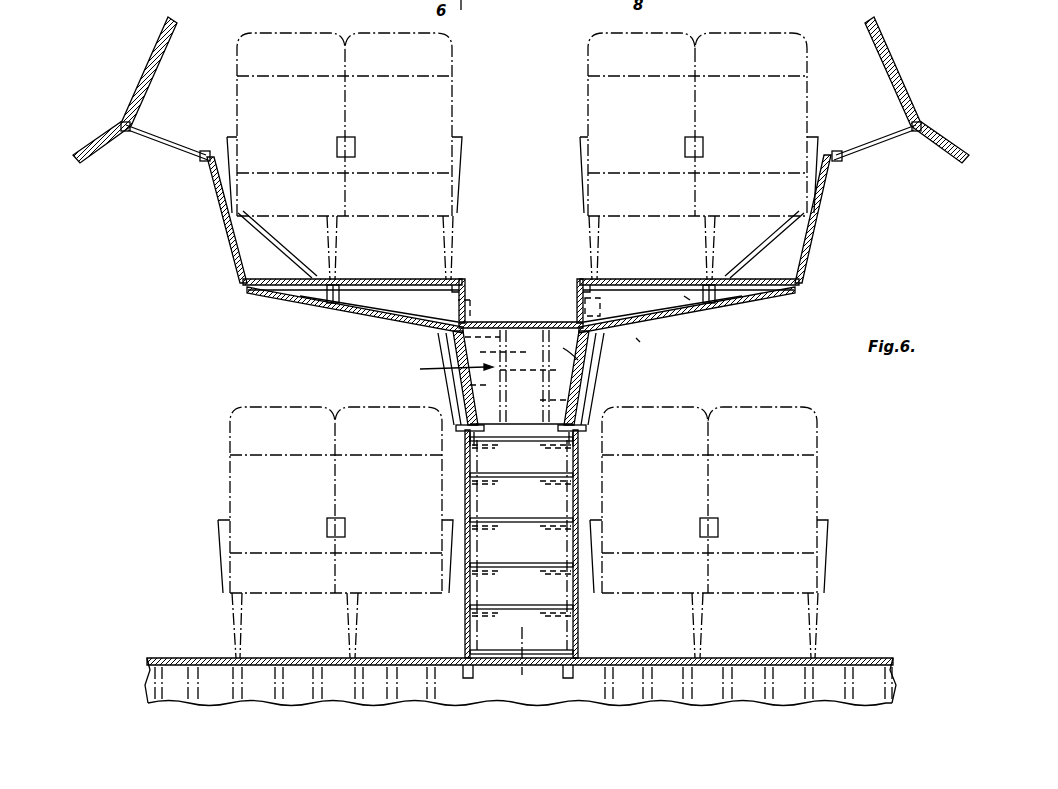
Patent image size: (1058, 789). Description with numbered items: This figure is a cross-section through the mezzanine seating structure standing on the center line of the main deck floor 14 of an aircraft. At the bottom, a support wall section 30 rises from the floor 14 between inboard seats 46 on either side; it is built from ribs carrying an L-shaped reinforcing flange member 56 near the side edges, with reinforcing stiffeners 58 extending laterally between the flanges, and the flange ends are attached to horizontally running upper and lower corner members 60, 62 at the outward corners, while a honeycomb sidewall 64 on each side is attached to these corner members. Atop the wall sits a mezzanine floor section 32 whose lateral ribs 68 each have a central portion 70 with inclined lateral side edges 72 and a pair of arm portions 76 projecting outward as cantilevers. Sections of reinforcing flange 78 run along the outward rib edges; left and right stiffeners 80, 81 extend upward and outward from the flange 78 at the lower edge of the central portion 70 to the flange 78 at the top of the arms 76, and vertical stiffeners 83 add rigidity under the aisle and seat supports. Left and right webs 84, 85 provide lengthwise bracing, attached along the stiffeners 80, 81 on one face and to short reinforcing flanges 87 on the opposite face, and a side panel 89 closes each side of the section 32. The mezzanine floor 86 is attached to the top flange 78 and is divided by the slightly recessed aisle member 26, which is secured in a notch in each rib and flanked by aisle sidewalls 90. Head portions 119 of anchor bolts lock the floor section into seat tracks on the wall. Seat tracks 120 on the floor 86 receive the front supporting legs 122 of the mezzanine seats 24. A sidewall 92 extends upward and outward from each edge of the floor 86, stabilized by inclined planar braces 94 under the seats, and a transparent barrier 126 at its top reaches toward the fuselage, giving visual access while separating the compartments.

The main deck floor 14 is at (867, 657).
The mezzanine seats 24 is at (255, 45).
The aisle member 26 is at (548, 326).
The support wall section 30 is at (558, 540).
The mezzanine floor section 32 is at (640, 340).
The inboard seat 46 is at (242, 423).
The L-shaped reinforcing flange member 56 is at (563, 501).
The reinforcing stiffeners 58 is at (550, 607).
The upper corner member 60 is at (466, 431).
The lower corner member 62 is at (467, 653).
The sidewall 64 is at (467, 590).
The rib 68 is at (444, 373).
The central portion 70 is at (563, 348).
The lateral side edges 72 is at (437, 352).
The arm portions 76 is at (390, 300).
The reinforcing flange 78 is at (289, 289).
The left stiffener 80 is at (465, 310).
The right stiffener 81 is at (594, 303).
The vertical stiffeners 83 is at (345, 297).
The left web 84 is at (460, 387).
The right web 85 is at (580, 362).
The mezzanine floor 86 is at (394, 279).
The reinforcing flange 87 is at (453, 343).
The side panel 89 is at (688, 298).
The aisle sidewalls 90 is at (468, 293).
The sidewall 92 is at (232, 232).
The inclined braces 94 is at (262, 250).
The head portion 119 is at (472, 441).
The seat tracks 120 is at (334, 281).
The front supporting legs 122 is at (453, 227).
The transparent barrier 126 is at (163, 143).